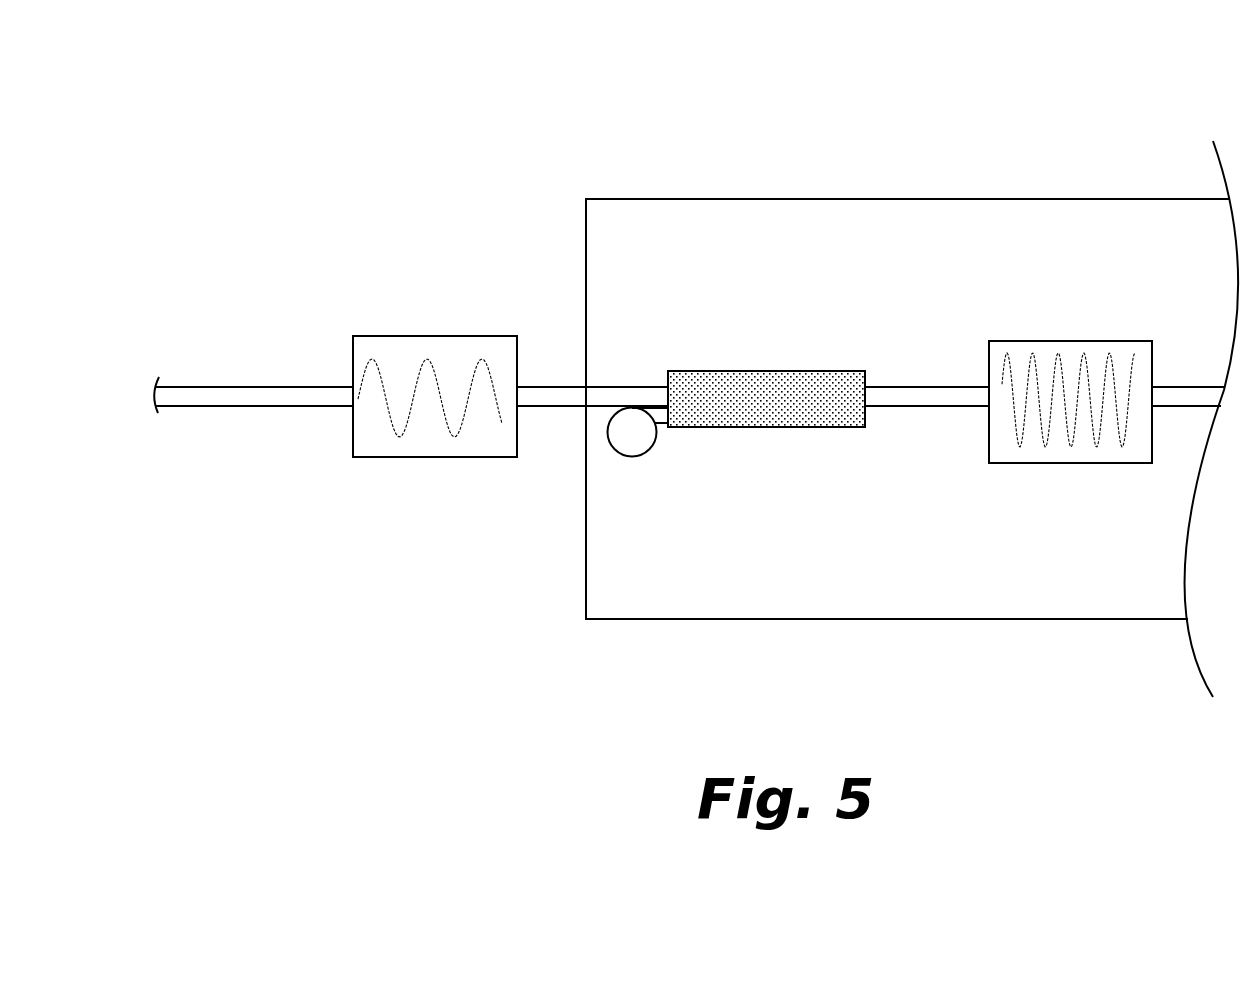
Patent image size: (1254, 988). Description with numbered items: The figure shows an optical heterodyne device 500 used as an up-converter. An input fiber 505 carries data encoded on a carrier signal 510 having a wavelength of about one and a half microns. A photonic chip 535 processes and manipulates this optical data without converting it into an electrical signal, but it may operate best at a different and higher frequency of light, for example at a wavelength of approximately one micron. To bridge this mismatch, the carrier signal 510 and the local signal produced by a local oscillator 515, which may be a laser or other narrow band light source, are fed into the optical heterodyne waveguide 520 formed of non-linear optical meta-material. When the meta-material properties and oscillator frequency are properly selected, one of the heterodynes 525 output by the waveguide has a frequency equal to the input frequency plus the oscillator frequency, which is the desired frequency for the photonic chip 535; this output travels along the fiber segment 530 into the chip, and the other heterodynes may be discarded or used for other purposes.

The optical heterodyne device 500 is at (526, 99).
The input fiber 505 is at (230, 393).
The carrier signal 510 is at (415, 342).
The local oscillator 515 is at (625, 442).
The optical heterodyne waveguide 520 is at (725, 410).
The heterodyne 525 is at (1048, 462).
The fiber segment 530 is at (900, 398).
The photonic chip 535 is at (900, 264).